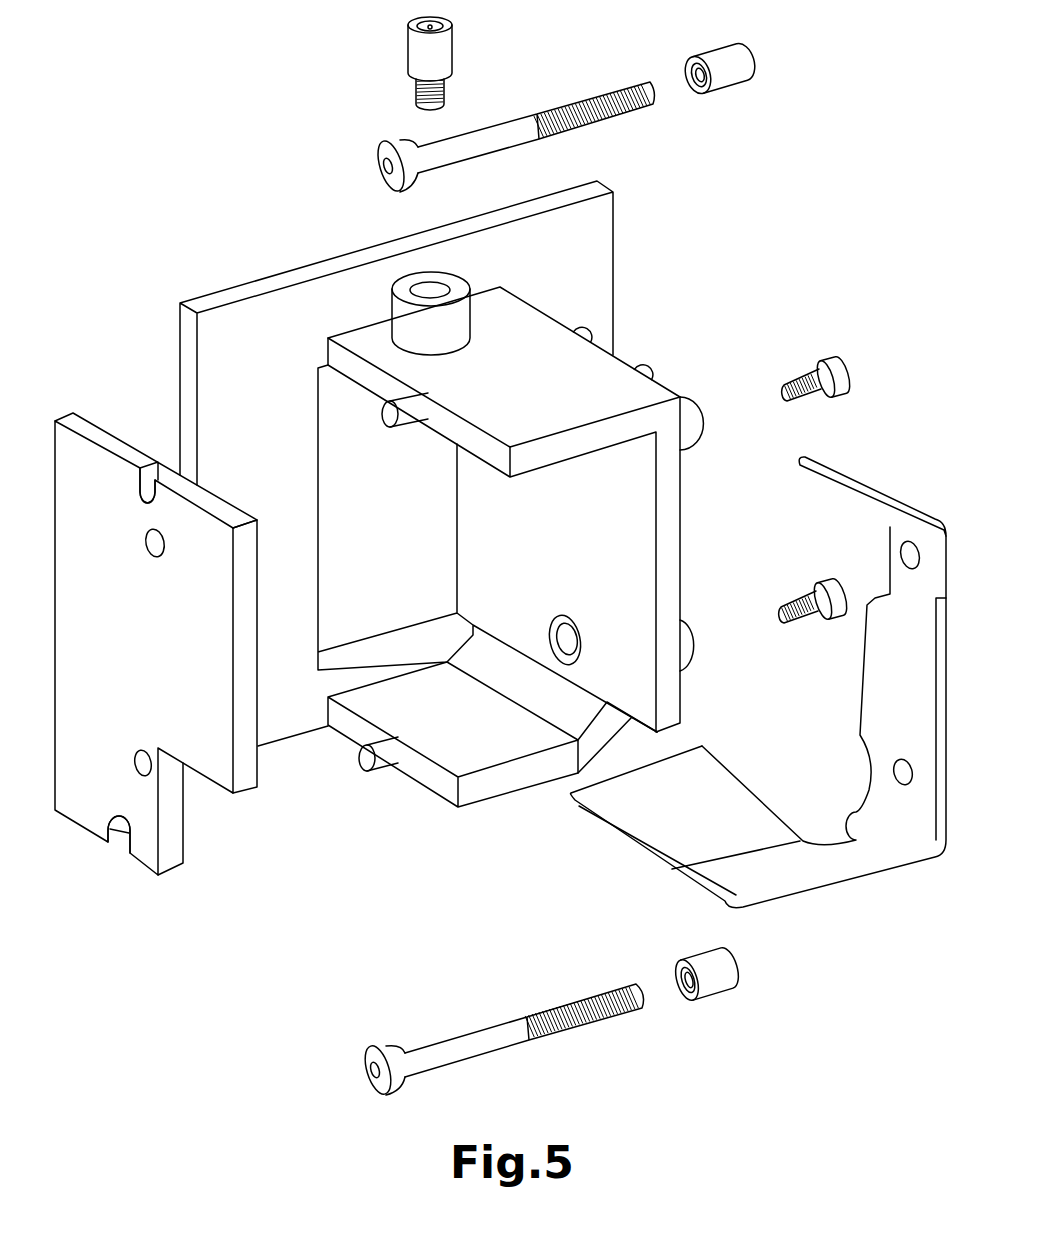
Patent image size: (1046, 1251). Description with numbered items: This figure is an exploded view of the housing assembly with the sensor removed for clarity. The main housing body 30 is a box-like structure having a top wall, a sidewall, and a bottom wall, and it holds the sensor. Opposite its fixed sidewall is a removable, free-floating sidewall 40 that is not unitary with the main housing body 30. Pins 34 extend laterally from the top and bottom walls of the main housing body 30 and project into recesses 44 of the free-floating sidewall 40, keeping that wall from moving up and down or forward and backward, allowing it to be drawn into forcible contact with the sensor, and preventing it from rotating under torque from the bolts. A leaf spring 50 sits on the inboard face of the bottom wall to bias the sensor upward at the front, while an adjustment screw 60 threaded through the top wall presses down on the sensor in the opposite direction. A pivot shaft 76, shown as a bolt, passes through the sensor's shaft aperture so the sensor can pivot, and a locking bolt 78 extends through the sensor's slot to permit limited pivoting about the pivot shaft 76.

The main housing body 30 is at (670, 542).
The pins 34 is at (390, 410).
The free-floating sidewall 40 is at (120, 677).
The recesses 44 is at (140, 485).
The leaf spring 50 is at (792, 866).
The adjustment screw 60 is at (424, 38).
The pivot shaft 76 is at (465, 1040).
The locking bolt 78 is at (488, 137).